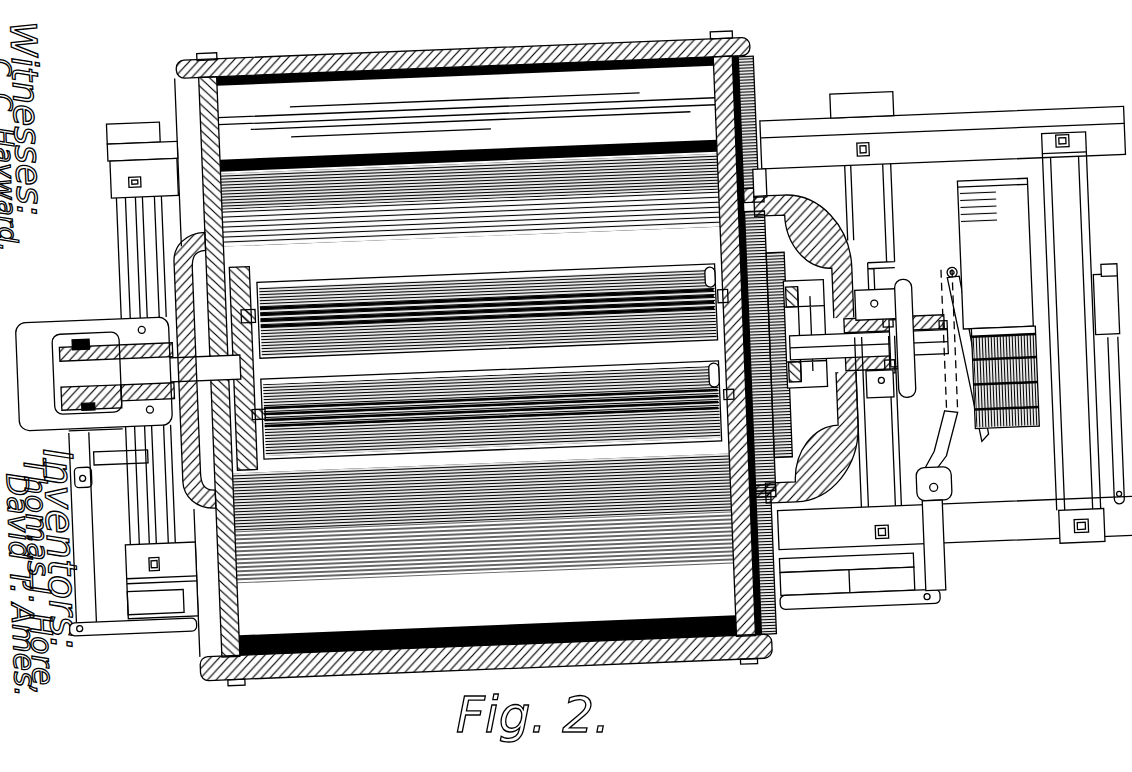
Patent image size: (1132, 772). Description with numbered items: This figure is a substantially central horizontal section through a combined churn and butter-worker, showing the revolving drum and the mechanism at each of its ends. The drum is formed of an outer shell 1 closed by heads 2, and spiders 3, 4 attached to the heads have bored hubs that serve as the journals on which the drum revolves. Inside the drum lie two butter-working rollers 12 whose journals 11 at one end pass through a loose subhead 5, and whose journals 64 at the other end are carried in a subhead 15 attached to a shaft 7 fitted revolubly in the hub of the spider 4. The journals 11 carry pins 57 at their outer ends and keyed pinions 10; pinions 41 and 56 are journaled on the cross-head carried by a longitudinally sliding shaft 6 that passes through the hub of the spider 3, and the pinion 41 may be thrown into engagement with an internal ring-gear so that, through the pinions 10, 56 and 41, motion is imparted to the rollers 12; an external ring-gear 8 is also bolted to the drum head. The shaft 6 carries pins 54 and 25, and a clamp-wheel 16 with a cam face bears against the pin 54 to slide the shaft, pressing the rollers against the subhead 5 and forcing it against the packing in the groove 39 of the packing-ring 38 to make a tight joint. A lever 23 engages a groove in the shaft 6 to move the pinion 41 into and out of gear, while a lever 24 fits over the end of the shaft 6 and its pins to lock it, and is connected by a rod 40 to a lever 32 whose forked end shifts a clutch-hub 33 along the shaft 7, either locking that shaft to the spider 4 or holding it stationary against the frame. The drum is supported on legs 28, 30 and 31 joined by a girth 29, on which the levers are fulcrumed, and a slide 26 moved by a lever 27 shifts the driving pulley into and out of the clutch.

The outer shell of the drum 1 is at (314, 55).
The heads of the drum 2 is at (228, 594).
The spider 3 is at (826, 243).
The spider 4 is at (204, 263).
The loose subhead 5 is at (748, 448).
The shaft 6 is at (869, 344).
The shaft 7 is at (150, 370).
The external ring-gear 8 is at (770, 188).
The pinions 10 is at (773, 287).
The journals 11 is at (716, 277).
The butter-working rollers 12 is at (448, 280).
The subhead 15 is at (273, 352).
The clamp-wheel 16 is at (878, 292).
The lever 23 is at (980, 460).
The lever 24 is at (936, 515).
The pin 25 is at (946, 344).
The slide 26 is at (1116, 289).
The lever 27 is at (1003, 452).
The leg of the frame 28 is at (1080, 208).
The cross-piece or girth 29 is at (118, 178).
The leg of the frame 30 is at (906, 449).
The leg of the frame 31 is at (124, 252).
The lever 32 is at (76, 542).
The clutch-hub 33 is at (77, 322).
The packing-ring 38 is at (797, 242).
The groove 39 is at (745, 245).
The rod 40 is at (162, 617).
The pinion 41 is at (795, 237).
The pin 54 is at (897, 290).
The pinion 56 is at (901, 395).
The pins 57 is at (796, 306).
The journals 64 is at (265, 305).